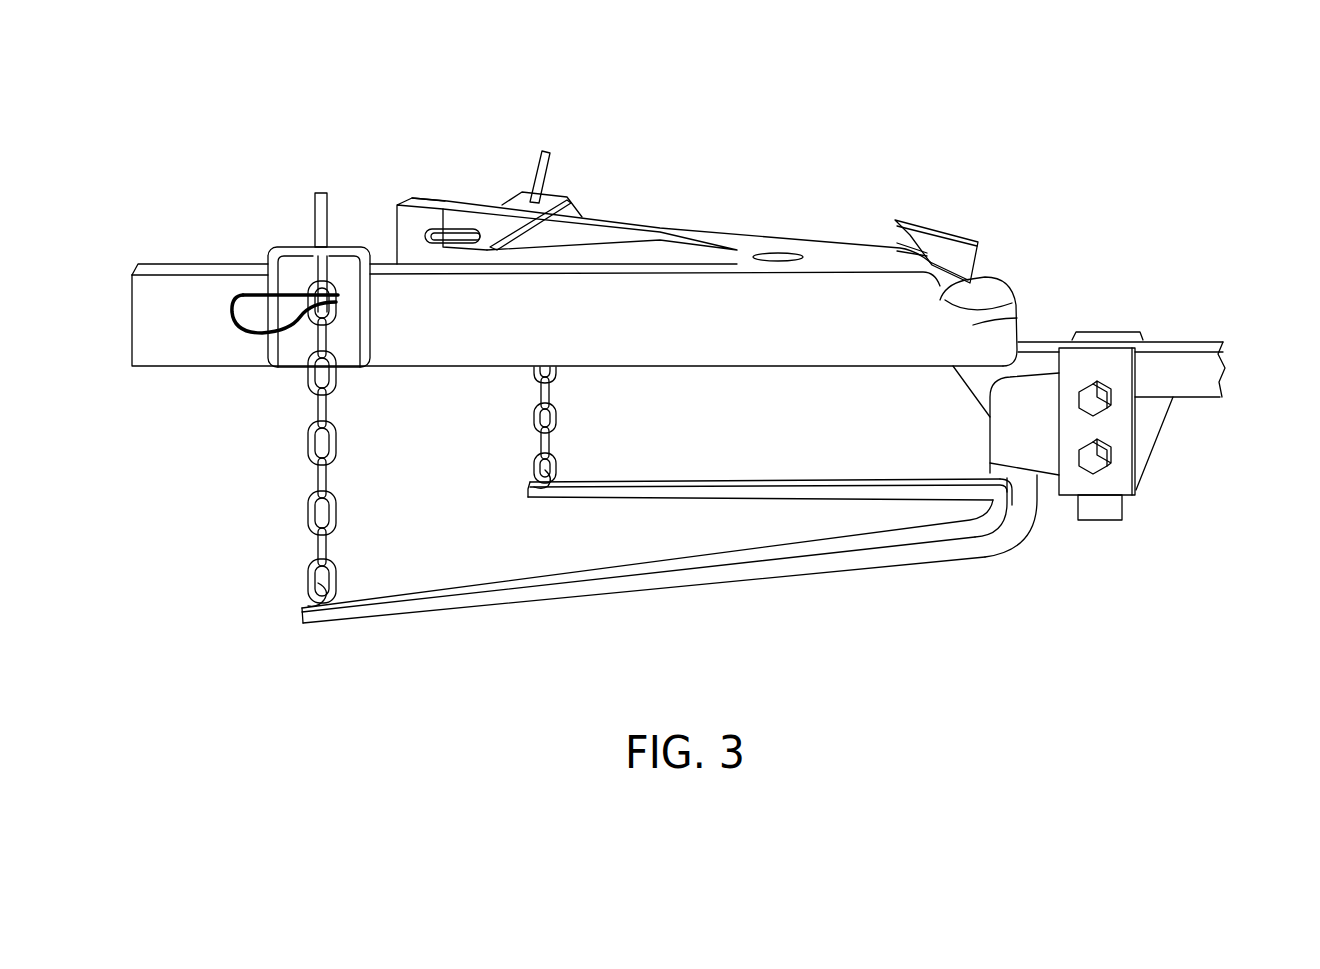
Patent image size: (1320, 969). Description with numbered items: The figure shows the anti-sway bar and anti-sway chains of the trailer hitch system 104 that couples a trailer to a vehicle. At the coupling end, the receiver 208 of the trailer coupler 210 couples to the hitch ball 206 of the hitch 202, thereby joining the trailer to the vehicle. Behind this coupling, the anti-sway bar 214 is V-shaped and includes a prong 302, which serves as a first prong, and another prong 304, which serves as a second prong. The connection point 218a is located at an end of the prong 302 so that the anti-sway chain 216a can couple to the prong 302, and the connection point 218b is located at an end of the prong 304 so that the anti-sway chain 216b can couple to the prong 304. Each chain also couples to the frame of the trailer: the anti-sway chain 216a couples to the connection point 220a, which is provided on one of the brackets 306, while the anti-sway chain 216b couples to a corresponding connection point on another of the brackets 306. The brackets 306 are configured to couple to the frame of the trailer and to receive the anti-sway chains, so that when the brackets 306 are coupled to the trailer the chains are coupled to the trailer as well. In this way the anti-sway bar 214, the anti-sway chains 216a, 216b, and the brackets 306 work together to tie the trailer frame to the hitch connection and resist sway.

The trailer hitch system 104 is at (1045, 107).
The hitch 202 is at (1222, 223).
The hitch ball 206 is at (1033, 278).
The receiver 208 is at (993, 290).
The trailer coupler 210 is at (830, 250).
The anti-sway bar 214 is at (987, 540).
The anti-sway chain 216a is at (307, 507).
The anti-sway chain 216b is at (528, 418).
The connection point 218a is at (298, 623).
The connection point 218b is at (528, 495).
The connection point 220a is at (268, 385).
The prong 302 is at (480, 600).
The prong 304 is at (657, 478).
The brackets 306 is at (283, 247).